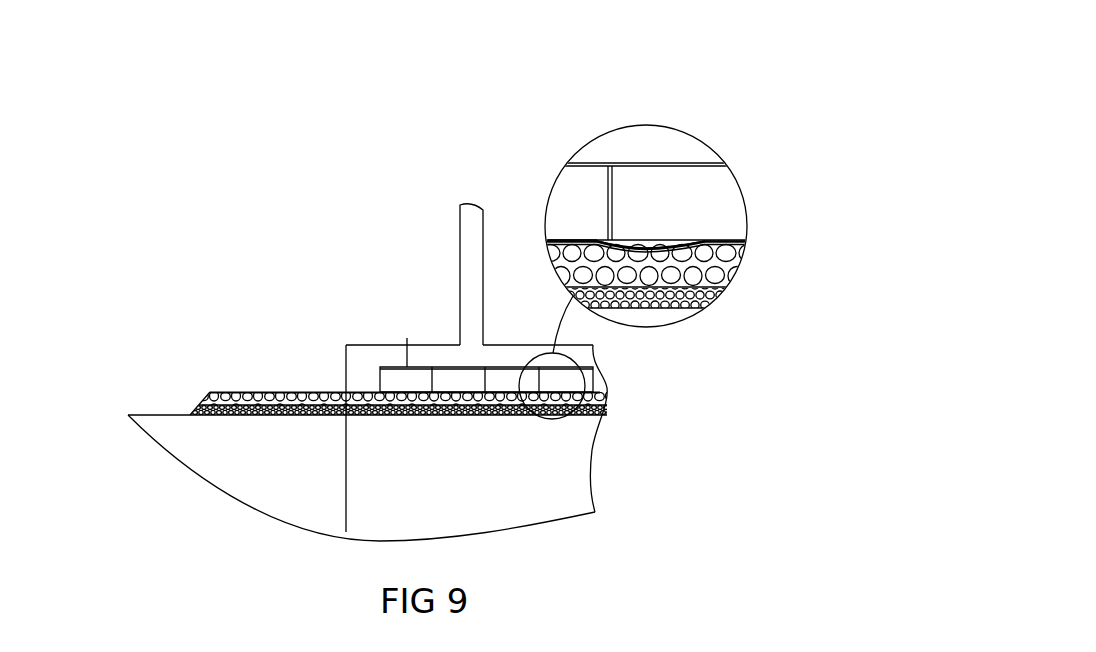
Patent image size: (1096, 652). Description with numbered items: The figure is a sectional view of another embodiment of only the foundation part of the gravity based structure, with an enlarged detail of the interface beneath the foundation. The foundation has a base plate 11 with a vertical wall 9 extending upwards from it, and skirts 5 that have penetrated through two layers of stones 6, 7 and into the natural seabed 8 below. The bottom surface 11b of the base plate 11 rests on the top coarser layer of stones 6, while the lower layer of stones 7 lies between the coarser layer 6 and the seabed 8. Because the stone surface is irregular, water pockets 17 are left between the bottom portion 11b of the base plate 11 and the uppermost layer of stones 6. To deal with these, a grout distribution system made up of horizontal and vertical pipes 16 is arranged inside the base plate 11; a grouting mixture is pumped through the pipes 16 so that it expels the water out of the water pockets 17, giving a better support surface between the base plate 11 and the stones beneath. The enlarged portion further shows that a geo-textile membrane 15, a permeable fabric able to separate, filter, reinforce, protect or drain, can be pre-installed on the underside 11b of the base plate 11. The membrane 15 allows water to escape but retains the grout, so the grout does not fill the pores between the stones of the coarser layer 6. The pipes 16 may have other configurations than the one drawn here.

The skirts 5 is at (345, 485).
The top coarser layer of stones 6 is at (563, 400).
The lower layer of stones 7 is at (585, 412).
The natural seabed 8 is at (145, 413).
The vertical wall 9 is at (465, 235).
The base plate 11 is at (355, 373).
The bottom surface of base plate 11b is at (570, 237).
The geo-textile membrane 15 is at (693, 246).
The grout distribution pipes 16 is at (407, 353).
The water pockets 17 is at (657, 242).